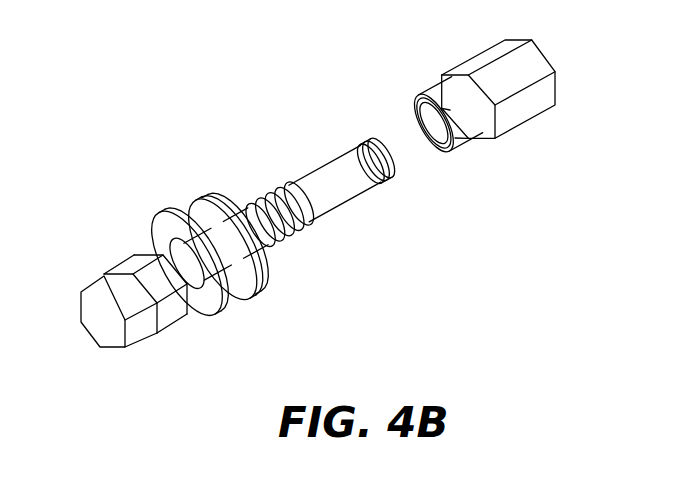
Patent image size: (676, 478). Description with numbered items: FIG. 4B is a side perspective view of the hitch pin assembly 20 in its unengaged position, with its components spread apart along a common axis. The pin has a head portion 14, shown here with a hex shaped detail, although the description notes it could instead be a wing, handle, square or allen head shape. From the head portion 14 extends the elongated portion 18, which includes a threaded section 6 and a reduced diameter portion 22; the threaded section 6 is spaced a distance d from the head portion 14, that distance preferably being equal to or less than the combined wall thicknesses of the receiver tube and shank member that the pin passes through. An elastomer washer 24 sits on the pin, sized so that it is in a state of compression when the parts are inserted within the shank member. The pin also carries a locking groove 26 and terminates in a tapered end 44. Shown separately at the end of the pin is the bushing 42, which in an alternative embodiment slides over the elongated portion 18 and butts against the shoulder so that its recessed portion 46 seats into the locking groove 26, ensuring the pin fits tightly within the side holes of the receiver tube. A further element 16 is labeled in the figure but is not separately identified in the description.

The hitch pin assembly 20 is at (163, 98).
The head portion 14 is at (108, 352).
The bolt head 16 is at (128, 256).
The reduced diameter portion 22 is at (170, 220).
The elastomer washer 24 is at (200, 197).
The elongated portion 18 is at (240, 194).
The threaded section 6 is at (290, 182).
The locking groove 26 is at (370, 143).
The tapered end 44 is at (393, 168).
The bushing 42 is at (530, 62).
The recessed portion 46 is at (470, 126).